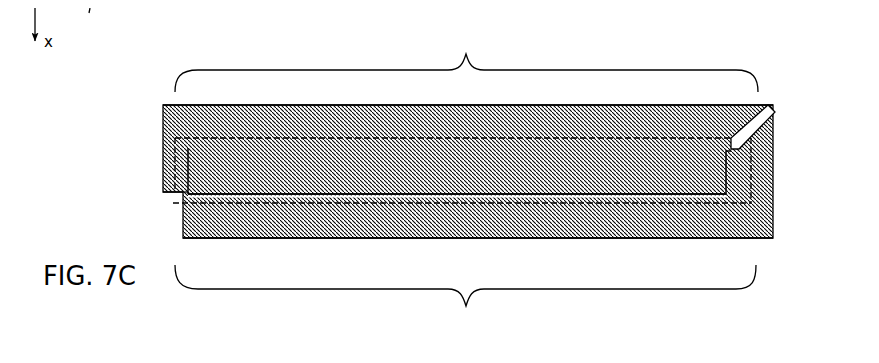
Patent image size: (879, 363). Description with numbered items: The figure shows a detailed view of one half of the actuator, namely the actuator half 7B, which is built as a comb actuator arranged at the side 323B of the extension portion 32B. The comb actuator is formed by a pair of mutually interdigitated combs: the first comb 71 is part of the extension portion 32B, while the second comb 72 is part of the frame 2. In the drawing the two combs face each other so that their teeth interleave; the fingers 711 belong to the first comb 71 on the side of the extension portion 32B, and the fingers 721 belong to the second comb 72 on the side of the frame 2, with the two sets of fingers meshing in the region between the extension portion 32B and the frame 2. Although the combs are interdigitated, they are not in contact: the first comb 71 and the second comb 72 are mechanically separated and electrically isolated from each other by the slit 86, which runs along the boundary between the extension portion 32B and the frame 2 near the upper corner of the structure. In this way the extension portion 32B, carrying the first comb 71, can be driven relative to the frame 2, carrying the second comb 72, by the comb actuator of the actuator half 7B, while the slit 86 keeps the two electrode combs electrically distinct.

The frame 2 is at (696, 212).
The actuator half 7B is at (603, 208).
The extension portion 32B is at (186, 110).
The side of the extension portion 323B is at (288, 128).
The first comb 71 is at (466, 61).
The second comb 72 is at (465, 297).
The upper electrode fingers 711 is at (383, 128).
The lower electrode fingers 721 is at (536, 196).
The slit 86 is at (768, 101).